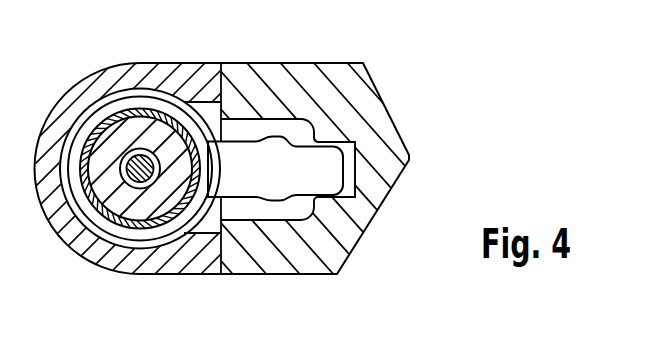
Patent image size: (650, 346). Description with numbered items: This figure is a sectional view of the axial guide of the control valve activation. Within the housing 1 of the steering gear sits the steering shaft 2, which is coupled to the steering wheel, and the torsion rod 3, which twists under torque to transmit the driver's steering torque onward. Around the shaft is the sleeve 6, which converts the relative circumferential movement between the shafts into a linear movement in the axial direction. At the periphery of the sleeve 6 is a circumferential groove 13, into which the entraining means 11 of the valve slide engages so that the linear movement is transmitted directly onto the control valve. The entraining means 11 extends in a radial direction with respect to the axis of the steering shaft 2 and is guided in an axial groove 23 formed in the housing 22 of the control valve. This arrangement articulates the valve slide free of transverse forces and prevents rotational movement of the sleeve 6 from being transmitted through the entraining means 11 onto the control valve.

The housing 1 is at (77, 104).
The steering shaft 2 is at (152, 131).
The torsion rod 3 is at (152, 155).
The sleeve 6 is at (125, 113).
The entraining means 11 is at (238, 156).
The circumferential groove 13 is at (118, 235).
The housing 22 is at (374, 108).
The axial groove 23 is at (360, 183).